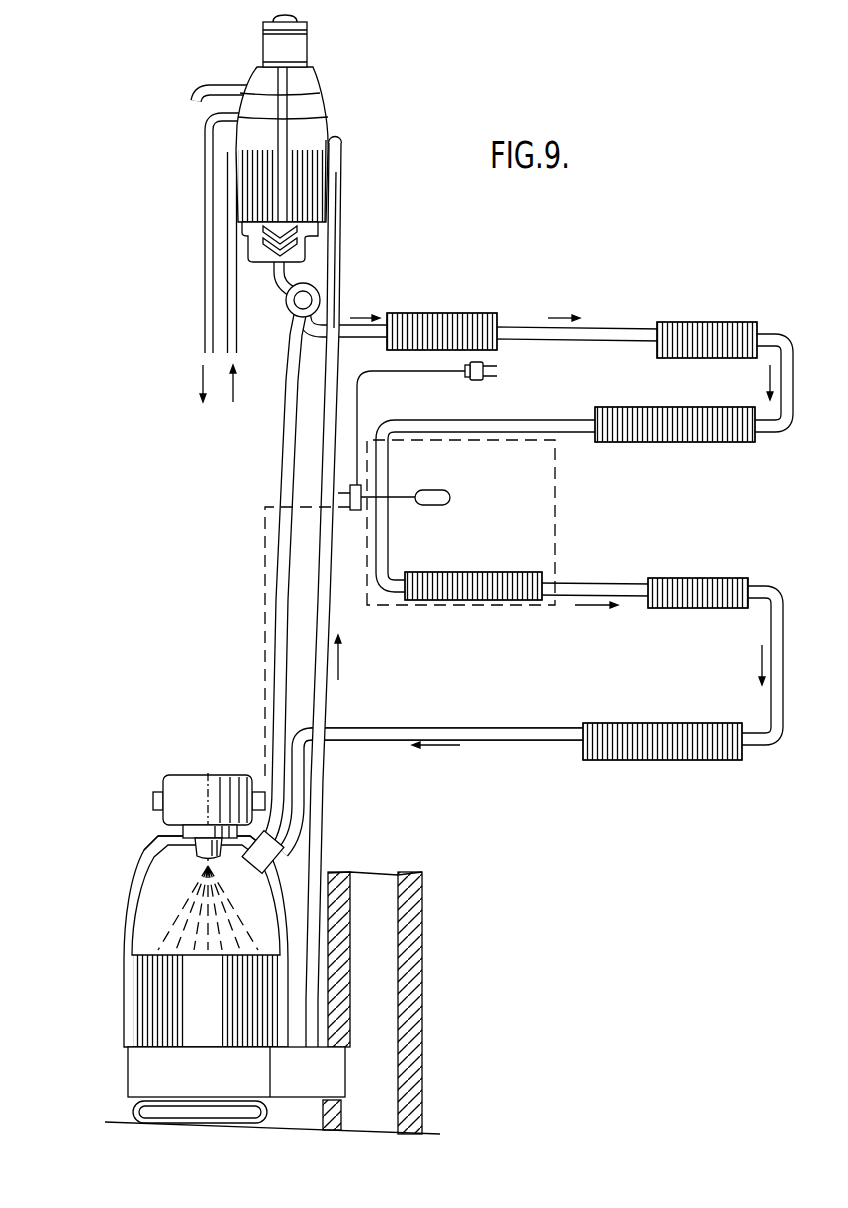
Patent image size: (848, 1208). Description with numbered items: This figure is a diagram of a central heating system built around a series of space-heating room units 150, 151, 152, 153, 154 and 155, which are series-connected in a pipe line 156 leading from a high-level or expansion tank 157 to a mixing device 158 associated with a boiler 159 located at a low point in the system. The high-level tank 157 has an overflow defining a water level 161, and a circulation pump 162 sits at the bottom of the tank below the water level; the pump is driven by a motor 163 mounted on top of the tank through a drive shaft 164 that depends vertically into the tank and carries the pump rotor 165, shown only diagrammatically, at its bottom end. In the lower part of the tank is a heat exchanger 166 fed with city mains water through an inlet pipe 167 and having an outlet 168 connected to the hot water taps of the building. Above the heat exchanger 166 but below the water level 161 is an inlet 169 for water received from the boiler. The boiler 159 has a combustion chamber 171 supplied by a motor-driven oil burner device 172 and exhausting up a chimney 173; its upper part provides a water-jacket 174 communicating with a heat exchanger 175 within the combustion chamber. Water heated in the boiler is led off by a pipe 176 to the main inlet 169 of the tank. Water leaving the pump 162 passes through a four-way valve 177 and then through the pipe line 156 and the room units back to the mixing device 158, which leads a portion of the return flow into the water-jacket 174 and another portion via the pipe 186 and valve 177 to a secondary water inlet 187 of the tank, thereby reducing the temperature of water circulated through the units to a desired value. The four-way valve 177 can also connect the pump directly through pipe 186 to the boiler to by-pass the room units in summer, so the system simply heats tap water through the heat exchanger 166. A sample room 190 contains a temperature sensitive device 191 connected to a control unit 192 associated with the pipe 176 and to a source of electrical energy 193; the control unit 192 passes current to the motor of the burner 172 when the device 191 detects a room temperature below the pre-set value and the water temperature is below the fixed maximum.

The space-heating room unit 150 is at (433, 313).
The space-heating room unit 151 is at (668, 322).
The space-heating room unit 152 is at (614, 408).
The space-heating room unit 153 is at (470, 573).
The space-heating room unit 154 is at (665, 578).
The space-heating room unit 155 is at (648, 724).
The pipe line 156 is at (430, 728).
The high-level tank 157 is at (274, 182).
The mixing device 158 is at (282, 860).
The boiler 159 is at (163, 831).
The water level 161 is at (312, 82).
The circulation pump 162 is at (302, 250).
The motor 163 is at (299, 32).
The drive shaft 164 is at (303, 118).
The pump rotor 165 is at (320, 232).
The heat exchanger 166 is at (240, 197).
The inlet pipe 167 is at (234, 320).
The outlet 168 is at (206, 147).
The inlet 169 is at (345, 143).
The combustion chamber 171 is at (196, 943).
The oil burner device 172 is at (198, 782).
The chimney 173 is at (393, 926).
The water-jacket 174 is at (157, 853).
The heat exchanger 175 is at (150, 1040).
The pipe 176 is at (320, 805).
The four-way valve 177 is at (321, 300).
The pipe 186 is at (282, 763).
The secondary water inlet 187 is at (326, 212).
The room 190 is at (556, 507).
The temperature sensitive device 191 is at (440, 490).
The control unit 192 is at (363, 507).
The source of electrical energy 193 is at (383, 372).